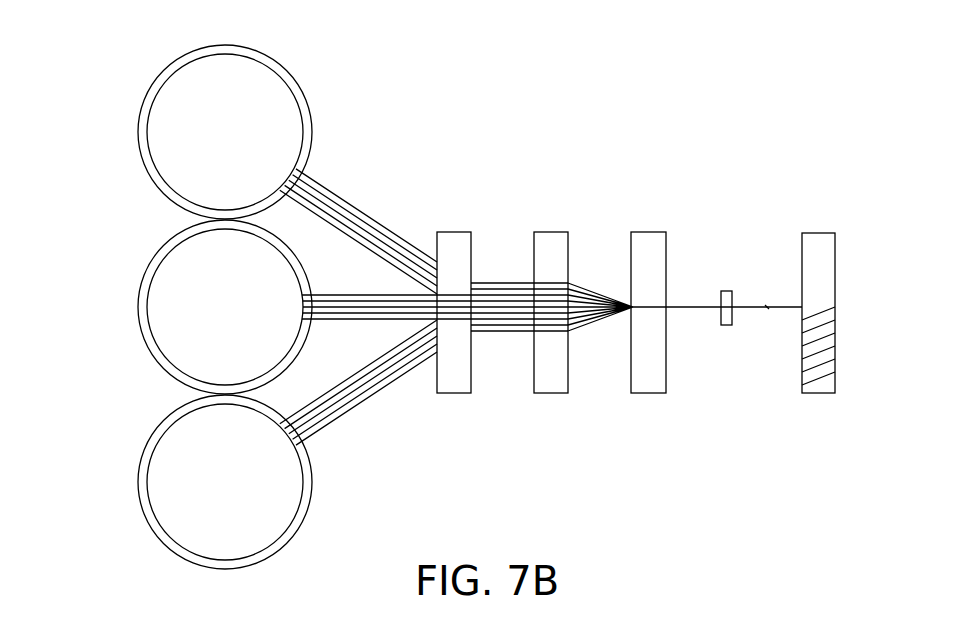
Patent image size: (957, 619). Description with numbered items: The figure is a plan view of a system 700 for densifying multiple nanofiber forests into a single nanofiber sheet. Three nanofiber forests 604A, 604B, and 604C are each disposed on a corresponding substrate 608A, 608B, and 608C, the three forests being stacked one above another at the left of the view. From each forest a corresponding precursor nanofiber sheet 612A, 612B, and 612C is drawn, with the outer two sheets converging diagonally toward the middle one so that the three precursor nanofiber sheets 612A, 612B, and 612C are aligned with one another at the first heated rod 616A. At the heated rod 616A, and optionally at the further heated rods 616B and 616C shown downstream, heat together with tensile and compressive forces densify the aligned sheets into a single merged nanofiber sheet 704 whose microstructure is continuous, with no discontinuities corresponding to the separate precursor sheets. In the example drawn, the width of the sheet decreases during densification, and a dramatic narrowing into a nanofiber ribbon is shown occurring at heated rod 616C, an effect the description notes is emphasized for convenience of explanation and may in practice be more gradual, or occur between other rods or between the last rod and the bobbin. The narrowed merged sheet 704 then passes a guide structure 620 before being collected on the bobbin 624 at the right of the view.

The system 700 is at (840, 94).
The nanofiber forest 604A is at (148, 135).
The nanofiber forest 604B is at (148, 308).
The nanofiber forest 604C is at (148, 485).
The substrate 608A is at (160, 187).
The substrate 608B is at (157, 363).
The substrate 608C is at (167, 545).
The precursor nanofiber sheet 612A is at (353, 208).
The precursor nanofiber sheet 612B is at (360, 295).
The precursor nanofiber sheet 612C is at (382, 390).
The first heated rod 616A is at (467, 232).
The heated rod 616B is at (545, 232).
The heated rod 616C is at (648, 232).
The guide structure 620 is at (727, 325).
The single merged nanofiber sheet 704 is at (767, 307).
The bobbin 624 is at (835, 233).